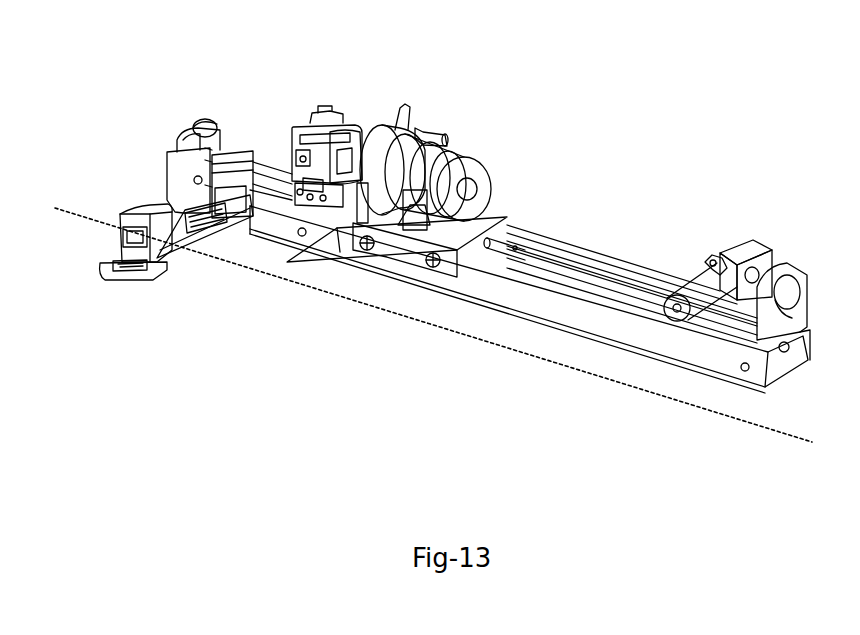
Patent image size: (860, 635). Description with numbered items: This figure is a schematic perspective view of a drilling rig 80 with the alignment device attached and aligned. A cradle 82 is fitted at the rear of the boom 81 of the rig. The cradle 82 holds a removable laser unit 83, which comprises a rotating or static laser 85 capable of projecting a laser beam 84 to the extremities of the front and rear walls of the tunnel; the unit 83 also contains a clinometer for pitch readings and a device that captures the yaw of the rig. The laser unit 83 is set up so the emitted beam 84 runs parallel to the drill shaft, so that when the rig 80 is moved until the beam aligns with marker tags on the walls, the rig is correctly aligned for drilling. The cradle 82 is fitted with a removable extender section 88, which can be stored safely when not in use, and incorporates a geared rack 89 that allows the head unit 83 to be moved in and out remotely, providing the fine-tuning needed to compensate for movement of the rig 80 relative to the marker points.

The drilling rig 80 is at (527, 182).
The boom 81 is at (637, 263).
The cradle 82 is at (230, 152).
The laser unit 83 is at (140, 210).
The laser beam 84 is at (470, 347).
The laser 85 is at (128, 242).
The extender section 88 is at (215, 242).
The geared rack 89 is at (195, 218).